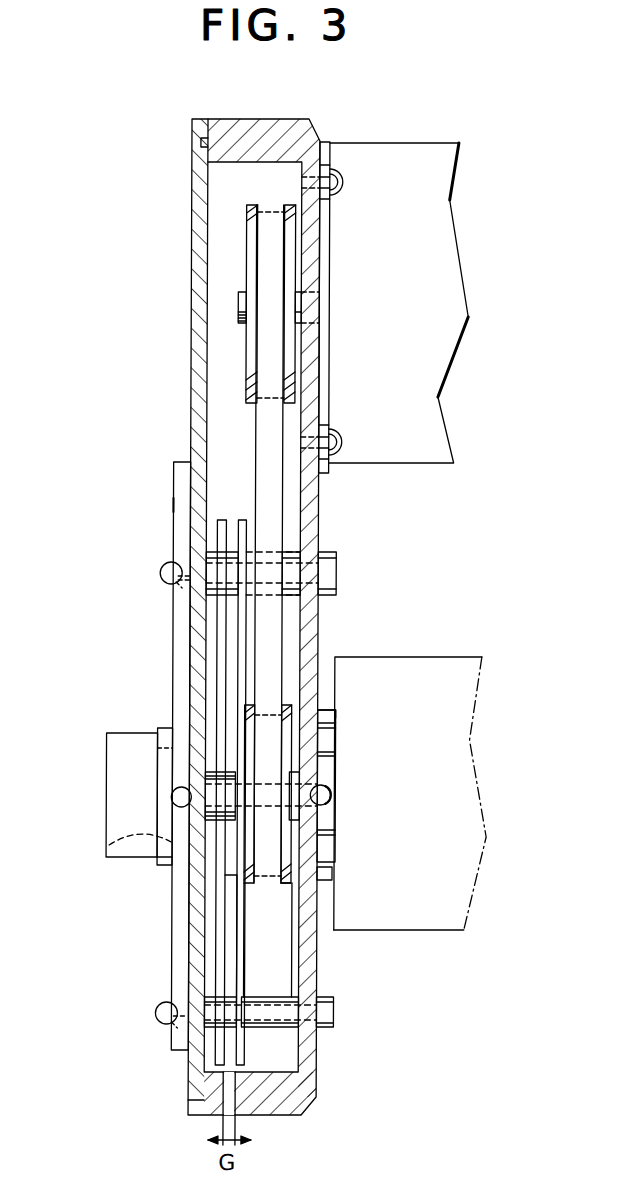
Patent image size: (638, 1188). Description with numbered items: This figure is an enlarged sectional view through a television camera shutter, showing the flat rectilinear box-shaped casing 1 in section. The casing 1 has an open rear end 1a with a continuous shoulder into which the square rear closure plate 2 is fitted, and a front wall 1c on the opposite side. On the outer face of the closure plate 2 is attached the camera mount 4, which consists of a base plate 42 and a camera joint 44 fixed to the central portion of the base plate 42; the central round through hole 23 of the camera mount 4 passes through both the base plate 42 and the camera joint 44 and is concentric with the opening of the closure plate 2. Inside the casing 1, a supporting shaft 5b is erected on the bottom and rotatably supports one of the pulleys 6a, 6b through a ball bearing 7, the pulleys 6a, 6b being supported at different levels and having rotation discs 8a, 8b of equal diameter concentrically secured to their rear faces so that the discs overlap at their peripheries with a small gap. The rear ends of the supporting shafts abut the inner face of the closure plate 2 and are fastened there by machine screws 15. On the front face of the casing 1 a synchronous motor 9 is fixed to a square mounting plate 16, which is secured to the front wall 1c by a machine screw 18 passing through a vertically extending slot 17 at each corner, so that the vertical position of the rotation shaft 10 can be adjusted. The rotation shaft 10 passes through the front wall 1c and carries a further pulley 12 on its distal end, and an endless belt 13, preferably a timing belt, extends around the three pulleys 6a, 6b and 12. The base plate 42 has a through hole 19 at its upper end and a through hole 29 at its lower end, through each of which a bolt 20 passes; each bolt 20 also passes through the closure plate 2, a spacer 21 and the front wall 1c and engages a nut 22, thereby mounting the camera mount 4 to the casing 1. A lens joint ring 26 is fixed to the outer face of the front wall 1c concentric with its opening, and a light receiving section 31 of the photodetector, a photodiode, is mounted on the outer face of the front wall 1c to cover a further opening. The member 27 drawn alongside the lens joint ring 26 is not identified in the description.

The casing 1 is at (254, 120).
The open rear end 1a is at (204, 152).
The front wall 1c is at (306, 490).
The rear closure plate 2 is at (190, 272).
The camera mount 4 is at (174, 480).
The supporting shaft 5b is at (190, 862).
The pulley 6a is at (228, 878).
The pulley 6b is at (284, 886).
The ball bearing 7 is at (212, 772).
The rotation disc 8a is at (222, 520).
The rotation disc 8b is at (243, 520).
The synchronous motor 9 is at (368, 143).
The rotation shaft 10 is at (238, 305).
The pulley 12 is at (245, 240).
The endless belt 13 is at (255, 446).
The machine screw 15 is at (176, 800).
The mounting plate 16 is at (324, 143).
The slot 17 is at (333, 170).
The machine screw 18 is at (342, 181).
The through hole 19 is at (178, 584).
The bolt 20 is at (163, 570).
The spacer 21 is at (290, 553).
The nut 22 is at (328, 553).
The through hole 23 is at (110, 845).
The lens joint ring 26 is at (337, 725).
The carriage 27 is at (348, 660).
The through hole 29 is at (140, 733).
The light receiving section 31 is at (325, 710).
The base plate 42 is at (173, 505).
The camera joint 44 is at (162, 865).